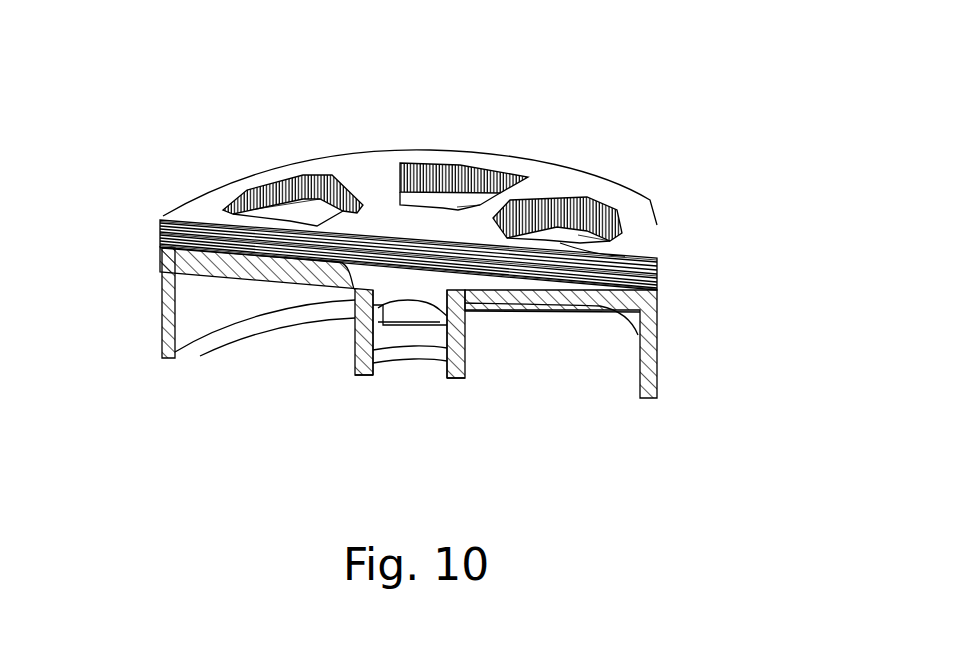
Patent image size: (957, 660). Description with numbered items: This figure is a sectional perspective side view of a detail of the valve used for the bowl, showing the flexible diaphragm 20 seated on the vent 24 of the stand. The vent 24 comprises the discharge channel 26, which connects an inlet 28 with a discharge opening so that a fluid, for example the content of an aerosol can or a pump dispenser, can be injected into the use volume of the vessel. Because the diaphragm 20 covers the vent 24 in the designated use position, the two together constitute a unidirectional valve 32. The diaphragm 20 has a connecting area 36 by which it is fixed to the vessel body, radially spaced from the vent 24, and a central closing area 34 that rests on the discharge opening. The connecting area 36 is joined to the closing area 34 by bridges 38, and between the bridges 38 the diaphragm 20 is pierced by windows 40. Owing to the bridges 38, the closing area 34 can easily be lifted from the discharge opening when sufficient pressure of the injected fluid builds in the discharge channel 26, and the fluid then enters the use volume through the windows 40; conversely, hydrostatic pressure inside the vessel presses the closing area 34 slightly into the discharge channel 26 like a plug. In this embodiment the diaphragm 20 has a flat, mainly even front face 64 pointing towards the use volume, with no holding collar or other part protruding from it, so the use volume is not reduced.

The diaphragm 20 is at (359, 146).
The vent 24 is at (470, 334).
The discharge channel 26 is at (405, 315).
The inlet 28 is at (412, 352).
The unidirectional valve 32 is at (495, 311).
The closing area 34 is at (335, 280).
The connecting area 36 is at (430, 150).
The bridges 38 is at (370, 188).
The windows 40 is at (250, 210).
The front face 64 is at (657, 272).